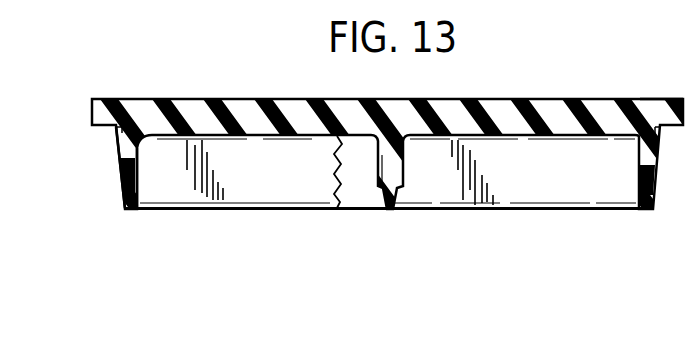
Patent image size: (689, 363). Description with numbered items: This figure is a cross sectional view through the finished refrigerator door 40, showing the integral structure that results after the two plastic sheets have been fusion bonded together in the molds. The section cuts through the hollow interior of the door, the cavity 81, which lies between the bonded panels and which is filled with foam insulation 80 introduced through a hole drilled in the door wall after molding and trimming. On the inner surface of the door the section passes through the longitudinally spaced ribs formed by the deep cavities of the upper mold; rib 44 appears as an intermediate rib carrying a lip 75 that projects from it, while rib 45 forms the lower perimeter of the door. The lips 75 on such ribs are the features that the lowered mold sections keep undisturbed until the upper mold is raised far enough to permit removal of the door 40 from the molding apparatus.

The refrigerator door 40 is at (171, 99).
The foam insulation 80 is at (239, 103).
The cavity 81 is at (606, 107).
The rib 44 is at (157, 172).
The rib 45 is at (561, 191).
The lip 75 is at (235, 205).